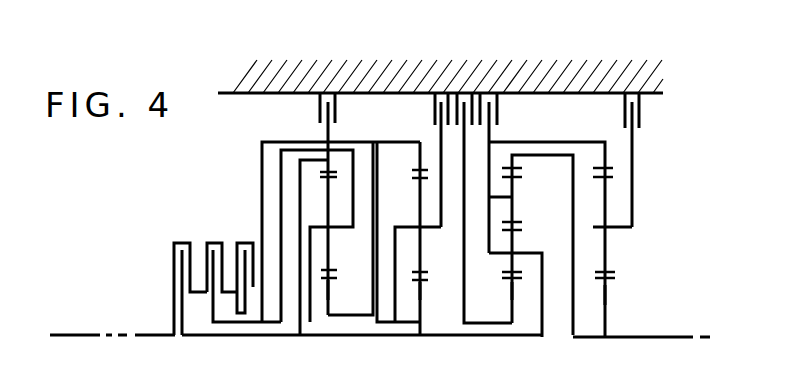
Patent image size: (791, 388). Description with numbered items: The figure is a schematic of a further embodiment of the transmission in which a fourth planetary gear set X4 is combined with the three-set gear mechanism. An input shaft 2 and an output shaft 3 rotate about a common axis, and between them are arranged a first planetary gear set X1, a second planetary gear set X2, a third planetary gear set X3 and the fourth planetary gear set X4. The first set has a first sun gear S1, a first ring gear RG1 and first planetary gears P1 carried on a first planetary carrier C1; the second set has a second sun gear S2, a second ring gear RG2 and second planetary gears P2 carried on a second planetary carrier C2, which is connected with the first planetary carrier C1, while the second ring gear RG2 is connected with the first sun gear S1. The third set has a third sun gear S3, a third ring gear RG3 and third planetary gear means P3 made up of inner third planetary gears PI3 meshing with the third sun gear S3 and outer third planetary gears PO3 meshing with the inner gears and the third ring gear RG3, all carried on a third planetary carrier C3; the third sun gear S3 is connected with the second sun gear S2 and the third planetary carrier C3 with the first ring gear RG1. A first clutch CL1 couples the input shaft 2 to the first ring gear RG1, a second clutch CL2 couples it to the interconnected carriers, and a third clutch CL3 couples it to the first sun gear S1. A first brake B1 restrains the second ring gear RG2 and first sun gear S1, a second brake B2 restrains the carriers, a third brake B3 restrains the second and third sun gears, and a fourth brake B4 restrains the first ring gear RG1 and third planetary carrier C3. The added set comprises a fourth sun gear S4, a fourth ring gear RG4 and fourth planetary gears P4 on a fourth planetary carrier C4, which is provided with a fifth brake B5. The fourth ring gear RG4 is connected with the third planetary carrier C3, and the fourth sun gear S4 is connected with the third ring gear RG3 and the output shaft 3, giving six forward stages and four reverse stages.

The input shaft 2 is at (149, 337).
The output shaft 3 is at (668, 338).
The first brake B1 is at (324, 108).
The second brake B2 is at (438, 108).
The third brake B3 is at (458, 108).
The fourth brake B4 is at (497, 108).
The fifth brake B5 is at (640, 108).
The first clutch CL1 is at (175, 243).
The second clutch CL2 is at (219, 241).
The third clutch CL3 is at (246, 242).
The first ring gear RG1 is at (333, 160).
The second ring gear RG2 is at (418, 156).
The third ring gear RG3 is at (513, 162).
The fourth ring gear RG4 is at (606, 156).
The first planetary carrier C1 is at (334, 226).
The second planetary carrier C2 is at (419, 224).
The third planetary carrier C3 is at (520, 253).
The fourth planetary carrier C4 is at (613, 226).
The first planetary gears P1 is at (330, 262).
The second planetary gears P2 is at (422, 245).
The third planetary gear means P3 is at (518, 220).
The fourth planetary gears P4 is at (608, 250).
The outer third planetary gears PO3 is at (517, 180).
The inner third planetary gears PI3 is at (506, 271).
The first sun gear S1 is at (329, 292).
The second sun gear S2 is at (420, 290).
The third sun gear S3 is at (511, 303).
The fourth sun gear S4 is at (607, 308).
The first planetary gear set X1 is at (321, 293).
The second planetary gear set X2 is at (416, 295).
The third planetary gear set X3 is at (517, 299).
The fourth planetary gear set X4 is at (598, 299).